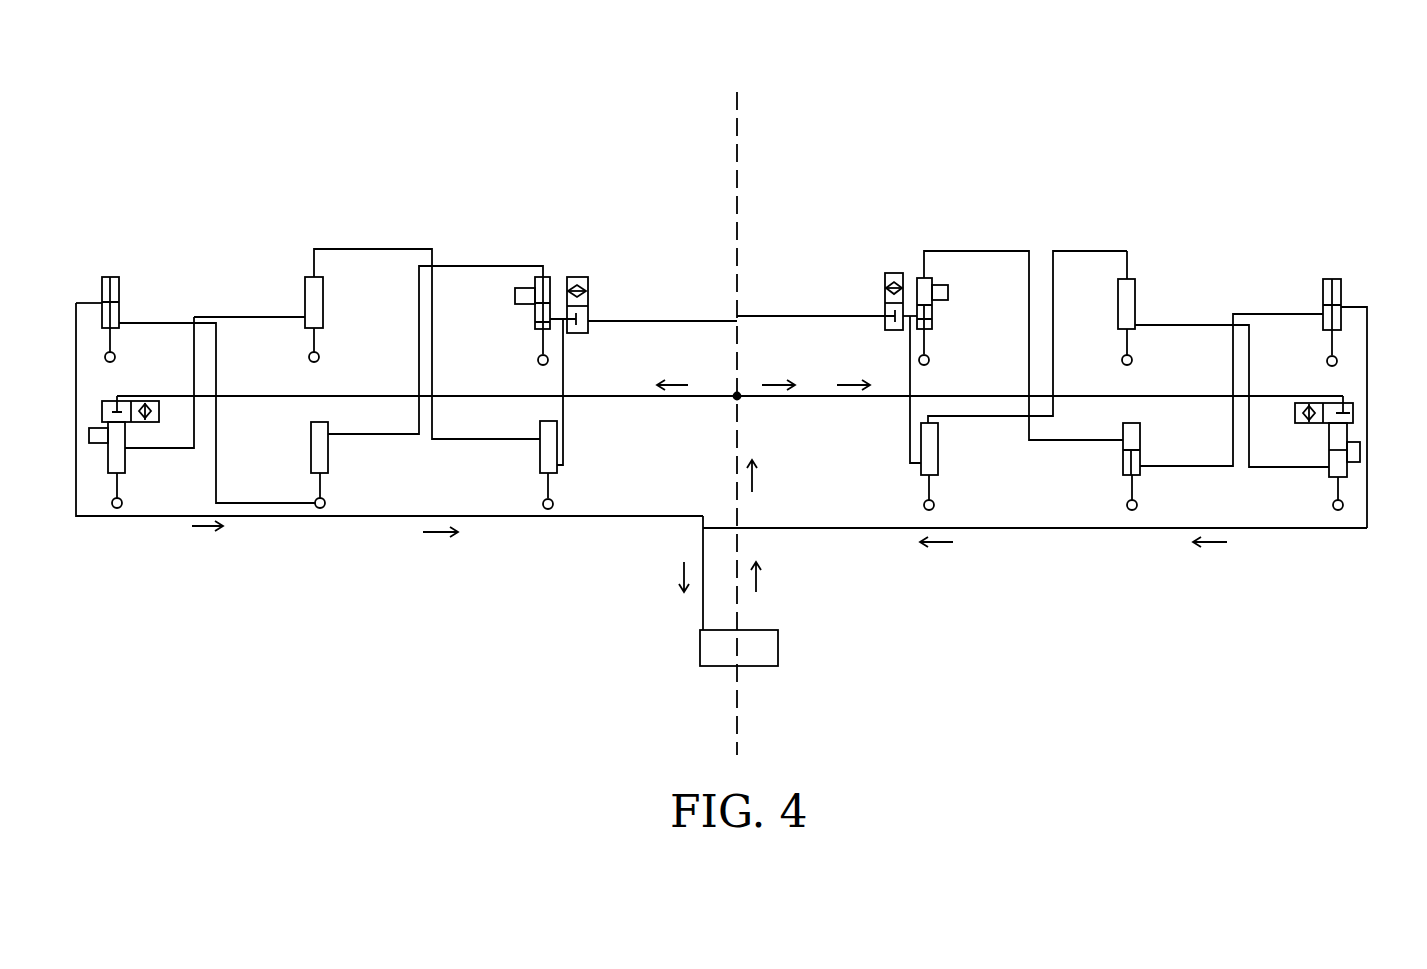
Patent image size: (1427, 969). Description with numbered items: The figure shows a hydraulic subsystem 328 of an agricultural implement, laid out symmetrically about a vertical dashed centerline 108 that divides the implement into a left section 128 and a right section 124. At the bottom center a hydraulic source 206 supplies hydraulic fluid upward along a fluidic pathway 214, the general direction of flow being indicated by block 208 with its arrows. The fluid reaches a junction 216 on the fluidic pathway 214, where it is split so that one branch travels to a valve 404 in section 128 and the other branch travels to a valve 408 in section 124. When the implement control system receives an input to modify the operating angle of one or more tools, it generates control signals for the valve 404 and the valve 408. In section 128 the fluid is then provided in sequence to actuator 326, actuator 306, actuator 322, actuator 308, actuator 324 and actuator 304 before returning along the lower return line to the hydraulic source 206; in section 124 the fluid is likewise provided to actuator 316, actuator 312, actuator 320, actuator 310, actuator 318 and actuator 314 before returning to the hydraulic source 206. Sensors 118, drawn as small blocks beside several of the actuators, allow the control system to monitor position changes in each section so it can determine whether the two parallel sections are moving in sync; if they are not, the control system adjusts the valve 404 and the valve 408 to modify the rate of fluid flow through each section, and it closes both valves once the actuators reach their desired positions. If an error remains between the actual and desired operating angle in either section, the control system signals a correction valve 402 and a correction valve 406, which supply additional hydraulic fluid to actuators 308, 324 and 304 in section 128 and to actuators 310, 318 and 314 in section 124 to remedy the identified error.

The hydraulic subsystem 328 is at (182, 124).
The centerline / axis 108 is at (737, 107).
The sensor 118 is at (525, 288).
The section 124 is at (1112, 678).
The section 128 is at (357, 657).
The hydraulic source 206 is at (739, 648).
The block 208 is at (758, 582).
The fluidic pathway 214 is at (620, 397).
The junction 216 is at (737, 396).
The actuator 304 is at (115, 276).
The actuator 306 is at (305, 290).
The actuator 308 is at (548, 277).
The actuator 310 is at (917, 280).
The actuator 312 is at (1135, 283).
The actuator 314 is at (1332, 278).
The actuator 316 is at (1345, 478).
The actuator 318 is at (88, 435).
The actuator 320 is at (938, 463).
The actuator 322 is at (540, 467).
The actuator 324 is at (317, 445).
The actuator 326 is at (112, 475).
The correction valve 402 is at (588, 292).
The valve 404 is at (100, 397).
The correction valve 406 is at (885, 293).
The valve 408 is at (1355, 400).